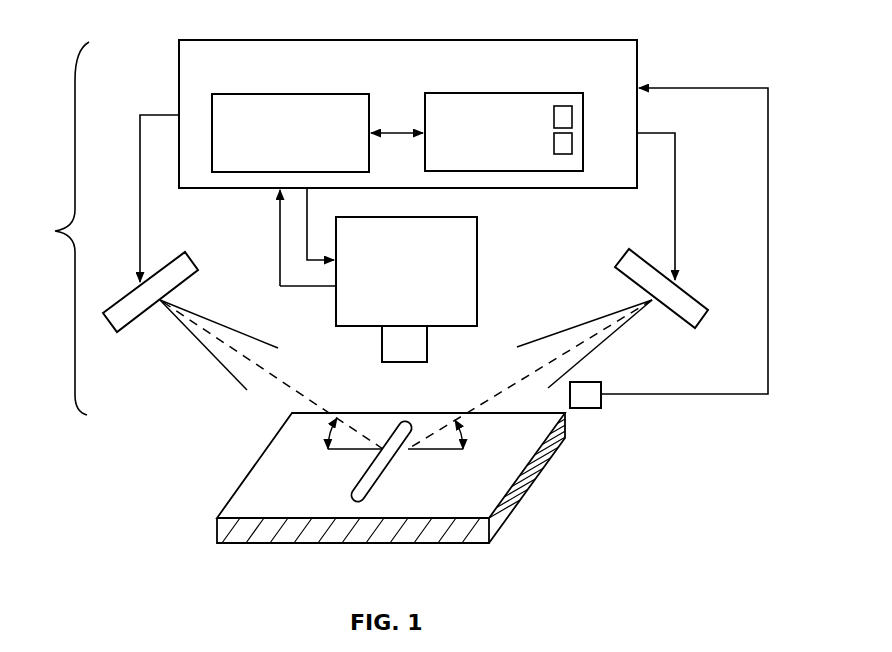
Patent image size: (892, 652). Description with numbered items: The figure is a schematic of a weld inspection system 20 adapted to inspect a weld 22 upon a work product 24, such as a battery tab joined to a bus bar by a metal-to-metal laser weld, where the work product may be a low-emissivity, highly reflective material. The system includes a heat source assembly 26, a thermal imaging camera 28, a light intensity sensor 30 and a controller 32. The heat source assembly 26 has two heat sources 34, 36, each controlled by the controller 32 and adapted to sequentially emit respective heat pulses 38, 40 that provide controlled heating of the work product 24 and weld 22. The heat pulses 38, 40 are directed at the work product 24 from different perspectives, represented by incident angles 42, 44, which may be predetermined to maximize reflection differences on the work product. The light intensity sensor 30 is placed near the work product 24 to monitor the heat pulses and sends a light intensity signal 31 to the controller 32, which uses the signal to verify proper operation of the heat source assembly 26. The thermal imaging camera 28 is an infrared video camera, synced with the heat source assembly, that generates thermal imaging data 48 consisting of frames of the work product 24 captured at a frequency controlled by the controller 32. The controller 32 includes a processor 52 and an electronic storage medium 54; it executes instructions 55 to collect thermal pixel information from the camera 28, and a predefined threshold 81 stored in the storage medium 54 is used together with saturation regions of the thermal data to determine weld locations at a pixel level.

The weld inspection system 20 is at (58, 228).
The weld 22 is at (386, 470).
The work product 24 is at (536, 489).
The heat source assembly 26 is at (435, 306).
The thermal imaging camera 28 is at (478, 280).
The light intensity sensor 30 is at (590, 381).
The light intensity signal 31 is at (768, 207).
The controller 32 is at (230, 39).
The heat source 34 is at (172, 258).
The heat source 36 is at (680, 281).
The heat pulse 38 is at (228, 325).
The heat pulse 40 is at (568, 330).
The incident angle 42 is at (320, 440).
The incident angle 44 is at (470, 437).
The thermal imaging data 48 is at (312, 287).
The processor 52 is at (260, 93).
The electronic storage medium 54 is at (540, 92).
The instructions 55 is at (563, 155).
The predefined threshold 81 is at (574, 115).